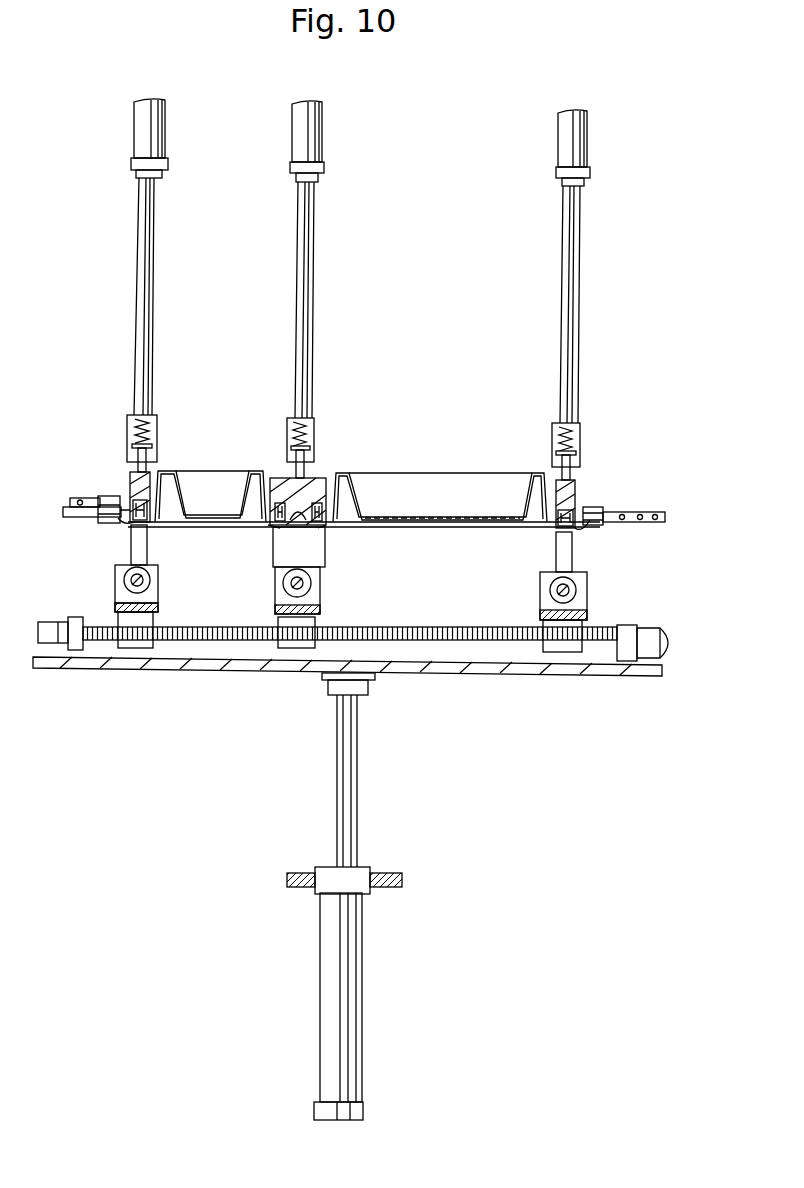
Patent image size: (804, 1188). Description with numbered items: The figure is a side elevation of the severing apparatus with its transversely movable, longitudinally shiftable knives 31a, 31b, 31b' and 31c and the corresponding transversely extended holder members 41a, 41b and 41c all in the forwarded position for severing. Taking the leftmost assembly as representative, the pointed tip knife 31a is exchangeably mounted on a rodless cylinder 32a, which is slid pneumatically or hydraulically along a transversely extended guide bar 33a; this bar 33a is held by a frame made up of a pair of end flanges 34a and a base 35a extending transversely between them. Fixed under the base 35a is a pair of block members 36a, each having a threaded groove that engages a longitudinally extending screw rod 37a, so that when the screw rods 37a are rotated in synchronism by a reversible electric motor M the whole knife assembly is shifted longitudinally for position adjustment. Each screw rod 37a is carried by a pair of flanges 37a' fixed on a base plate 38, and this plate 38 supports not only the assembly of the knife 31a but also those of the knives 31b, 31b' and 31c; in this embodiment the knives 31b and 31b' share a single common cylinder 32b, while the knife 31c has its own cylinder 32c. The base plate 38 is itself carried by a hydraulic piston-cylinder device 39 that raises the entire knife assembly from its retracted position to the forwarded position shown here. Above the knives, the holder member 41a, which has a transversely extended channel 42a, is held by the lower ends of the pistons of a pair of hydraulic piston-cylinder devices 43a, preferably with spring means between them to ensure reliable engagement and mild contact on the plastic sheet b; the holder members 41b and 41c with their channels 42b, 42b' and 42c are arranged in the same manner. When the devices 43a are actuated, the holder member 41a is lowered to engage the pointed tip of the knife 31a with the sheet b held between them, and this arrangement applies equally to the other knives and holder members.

The hydraulic piston-cylinder device 43a is at (137, 134).
The holder member 41a is at (138, 488).
The transversely extended channel 42a is at (135, 508).
The holder member 41b is at (300, 495).
The transversely extended channel 42b is at (269, 477).
The transversely extended channel 42b' is at (350, 480).
The holder member 41c is at (568, 500).
The transversely extended channel 42c is at (565, 518).
The pointed tip knife 31a is at (128, 525).
The knife 31b is at (254, 542).
The knife 31b' is at (355, 542).
The knife 31c is at (575, 535).
The rodless cylinder 32a is at (118, 580).
The guide bar 33a is at (150, 580).
The end flange 34a is at (158, 605).
The base 35a is at (115, 606).
The common cylinder 32b is at (310, 582).
The cylinder 32c is at (563, 592).
The block member 36a is at (133, 636).
The screw rod 37a is at (350, 673).
The flange 37a' is at (351, 671).
The base plate 38 is at (521, 672).
The hydraulic piston-cylinder device 39 is at (355, 993).
The reversible electric motor M is at (655, 630).
The plastic sheet b is at (200, 527).